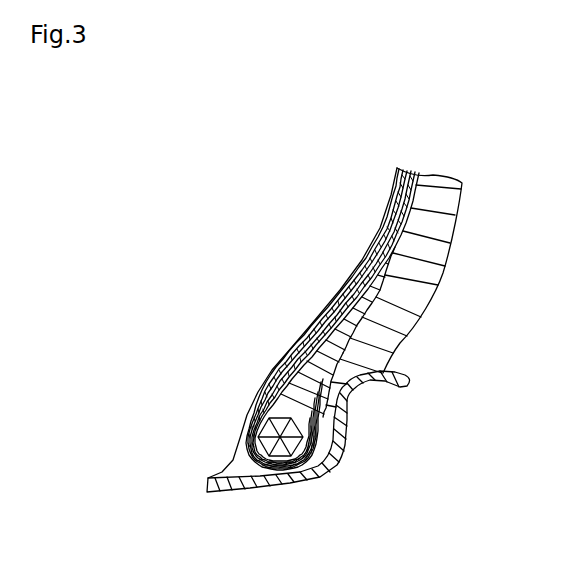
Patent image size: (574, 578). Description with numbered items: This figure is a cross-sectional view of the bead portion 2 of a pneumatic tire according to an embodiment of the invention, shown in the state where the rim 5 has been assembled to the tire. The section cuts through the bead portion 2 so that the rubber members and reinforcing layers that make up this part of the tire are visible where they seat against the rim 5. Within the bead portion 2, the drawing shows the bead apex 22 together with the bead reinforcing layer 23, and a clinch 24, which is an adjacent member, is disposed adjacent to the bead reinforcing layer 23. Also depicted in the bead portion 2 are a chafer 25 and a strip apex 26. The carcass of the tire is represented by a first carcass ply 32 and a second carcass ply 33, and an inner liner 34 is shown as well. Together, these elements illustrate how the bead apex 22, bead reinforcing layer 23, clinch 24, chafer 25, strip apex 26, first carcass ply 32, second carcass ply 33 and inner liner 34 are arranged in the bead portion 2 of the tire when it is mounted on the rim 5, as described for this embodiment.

The bead portion 2 is at (436, 410).
The rim 5 is at (279, 480).
The bead apex 22 is at (275, 405).
The bead reinforcing layer 23 is at (327, 355).
The clinch 24 is at (403, 295).
The chafer 25 is at (224, 463).
The strip apex 26 is at (400, 187).
The first carcass ply 32 is at (300, 441).
The second carcass ply 33 is at (310, 440).
The inner liner 34 is at (375, 240).